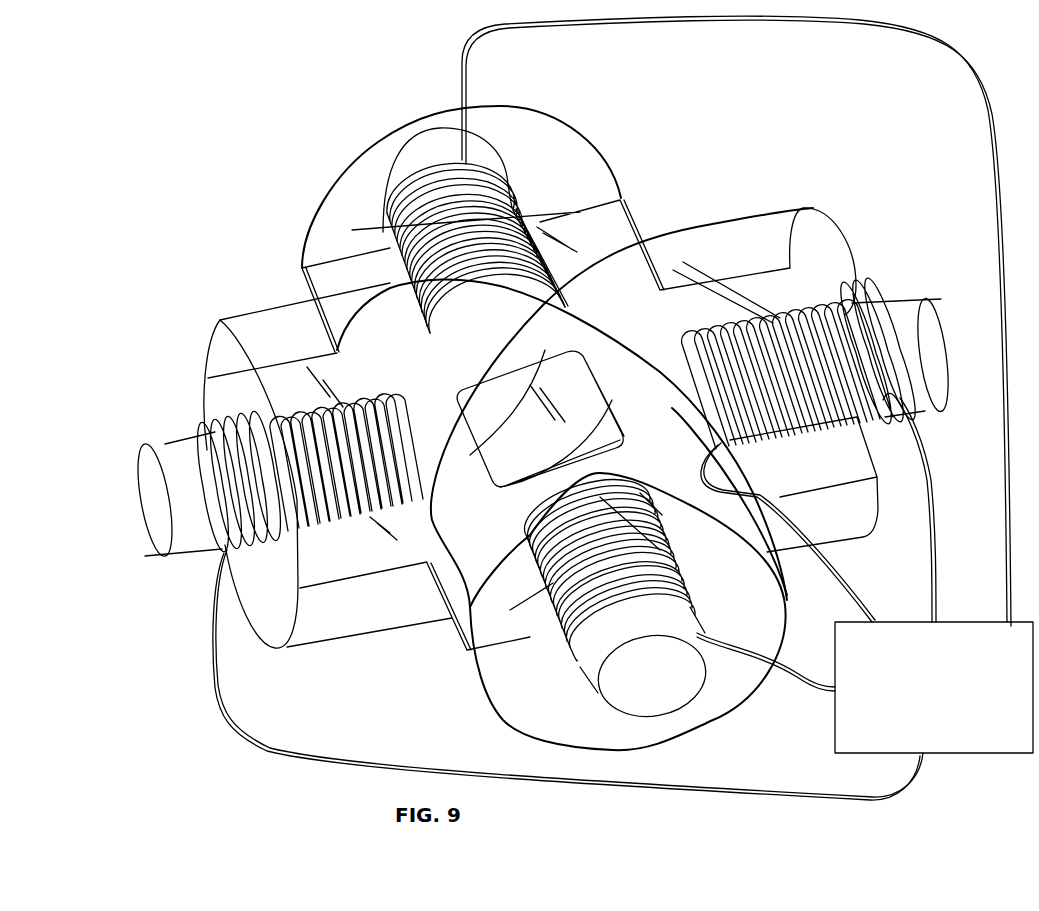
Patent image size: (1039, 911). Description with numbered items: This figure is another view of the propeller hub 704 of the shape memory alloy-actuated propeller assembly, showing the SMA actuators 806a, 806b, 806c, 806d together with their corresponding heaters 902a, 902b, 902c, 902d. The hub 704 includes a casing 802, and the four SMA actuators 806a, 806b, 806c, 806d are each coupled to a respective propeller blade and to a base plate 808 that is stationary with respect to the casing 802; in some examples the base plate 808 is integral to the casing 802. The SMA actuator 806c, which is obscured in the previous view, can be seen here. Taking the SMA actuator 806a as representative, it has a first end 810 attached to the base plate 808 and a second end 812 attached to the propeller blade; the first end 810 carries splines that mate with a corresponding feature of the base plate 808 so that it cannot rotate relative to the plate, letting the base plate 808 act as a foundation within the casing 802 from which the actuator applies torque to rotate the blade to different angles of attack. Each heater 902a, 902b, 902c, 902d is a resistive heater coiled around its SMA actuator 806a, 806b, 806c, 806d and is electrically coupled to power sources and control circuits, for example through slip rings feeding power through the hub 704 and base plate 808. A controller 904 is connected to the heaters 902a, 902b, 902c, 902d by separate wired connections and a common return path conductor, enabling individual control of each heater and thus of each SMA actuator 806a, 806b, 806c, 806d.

The propeller hub 704 is at (203, 203).
The casing 802 is at (805, 226).
The SMA actuator 806a is at (424, 145).
The SMA actuator 806b is at (925, 410).
The SMA actuator 806c is at (676, 692).
The SMA actuator 806d is at (186, 442).
The base plate 808 is at (662, 320).
The first end 810 is at (400, 300).
The second end 812 is at (477, 126).
The heater 902a is at (500, 213).
The heater 902b is at (843, 303).
The heater 902c is at (690, 583).
The heater 902d is at (235, 565).
The controller 904 is at (965, 753).